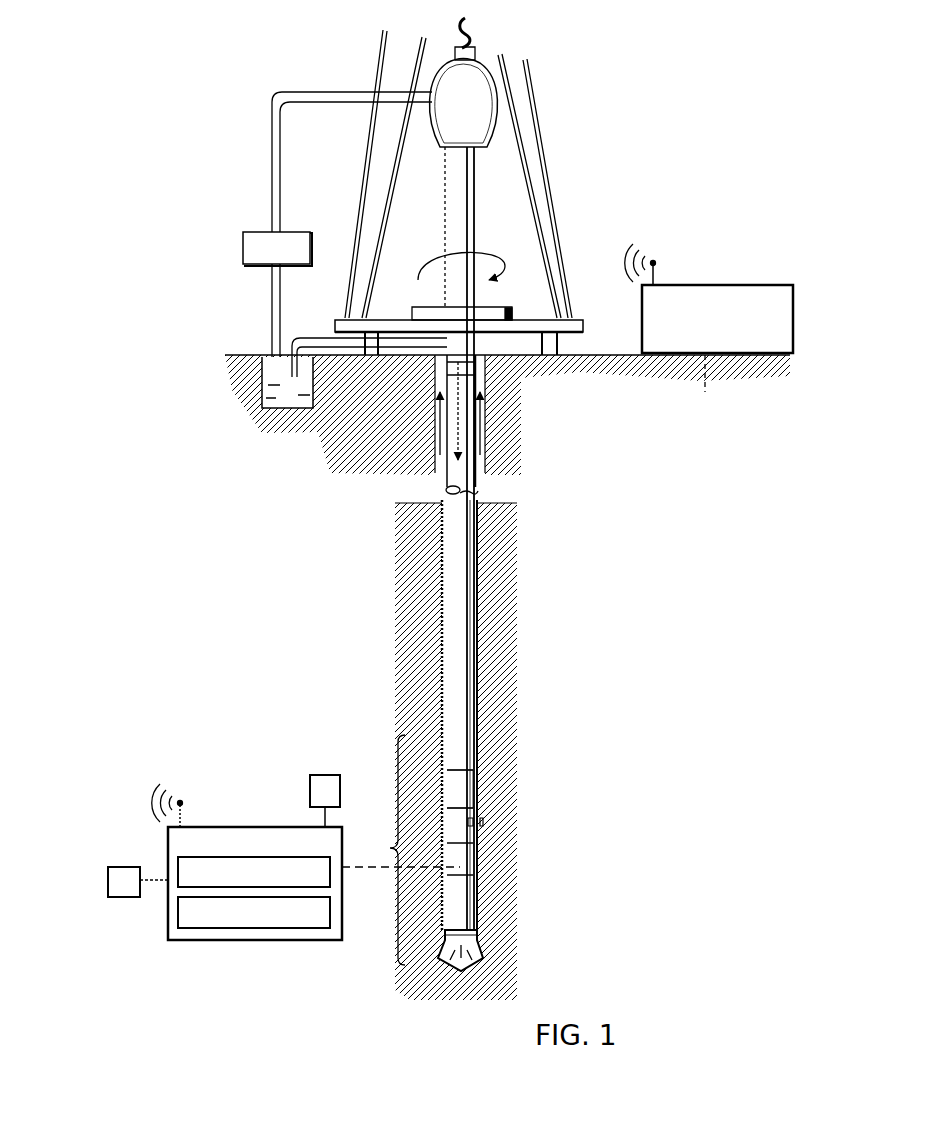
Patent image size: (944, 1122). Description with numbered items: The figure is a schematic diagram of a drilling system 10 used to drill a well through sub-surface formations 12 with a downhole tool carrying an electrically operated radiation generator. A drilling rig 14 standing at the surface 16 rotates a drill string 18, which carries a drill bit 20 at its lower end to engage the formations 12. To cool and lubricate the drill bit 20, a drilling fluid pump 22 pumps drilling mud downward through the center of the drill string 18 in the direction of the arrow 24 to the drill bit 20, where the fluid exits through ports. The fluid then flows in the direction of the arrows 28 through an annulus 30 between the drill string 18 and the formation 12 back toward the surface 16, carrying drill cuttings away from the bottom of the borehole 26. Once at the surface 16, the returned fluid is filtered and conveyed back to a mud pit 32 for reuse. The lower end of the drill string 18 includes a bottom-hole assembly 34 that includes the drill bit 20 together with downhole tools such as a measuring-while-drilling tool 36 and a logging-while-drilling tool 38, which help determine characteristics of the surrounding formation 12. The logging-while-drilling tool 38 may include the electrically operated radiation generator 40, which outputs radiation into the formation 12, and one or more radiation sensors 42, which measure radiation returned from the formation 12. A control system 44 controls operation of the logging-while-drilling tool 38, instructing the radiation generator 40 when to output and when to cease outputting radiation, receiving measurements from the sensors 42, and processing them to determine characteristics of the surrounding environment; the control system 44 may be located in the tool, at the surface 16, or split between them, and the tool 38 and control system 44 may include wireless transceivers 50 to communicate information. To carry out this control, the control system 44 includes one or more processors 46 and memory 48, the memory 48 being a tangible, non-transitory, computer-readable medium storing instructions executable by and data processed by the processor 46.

The drilling system 10 is at (597, 48).
The sub-surface formations 12 is at (617, 655).
The drilling rig 14 is at (556, 108).
The surface 16 is at (613, 352).
The drill string 18 is at (458, 350).
The drill bit 20 is at (480, 934).
The drilling fluid pump 22 is at (243, 248).
The arrow 24 is at (440, 454).
The borehole 26 is at (440, 668).
The arrows 28 is at (433, 421).
The annulus 30 is at (480, 352).
The mud pit 32 is at (293, 410).
The bottom-hole assembly 34 is at (390, 848).
The measuring-while-drilling (MWD) tool 36 is at (464, 792).
The logging-while-drilling (LWD) tool 38 is at (464, 858).
The electrically operated radiation generator 40 is at (310, 797).
The radiation sensors 42 is at (108, 880).
The control system 44 is at (738, 283).
The processor 46 is at (178, 868).
The memory 48 is at (178, 916).
The wireless transceivers 50 is at (657, 262).